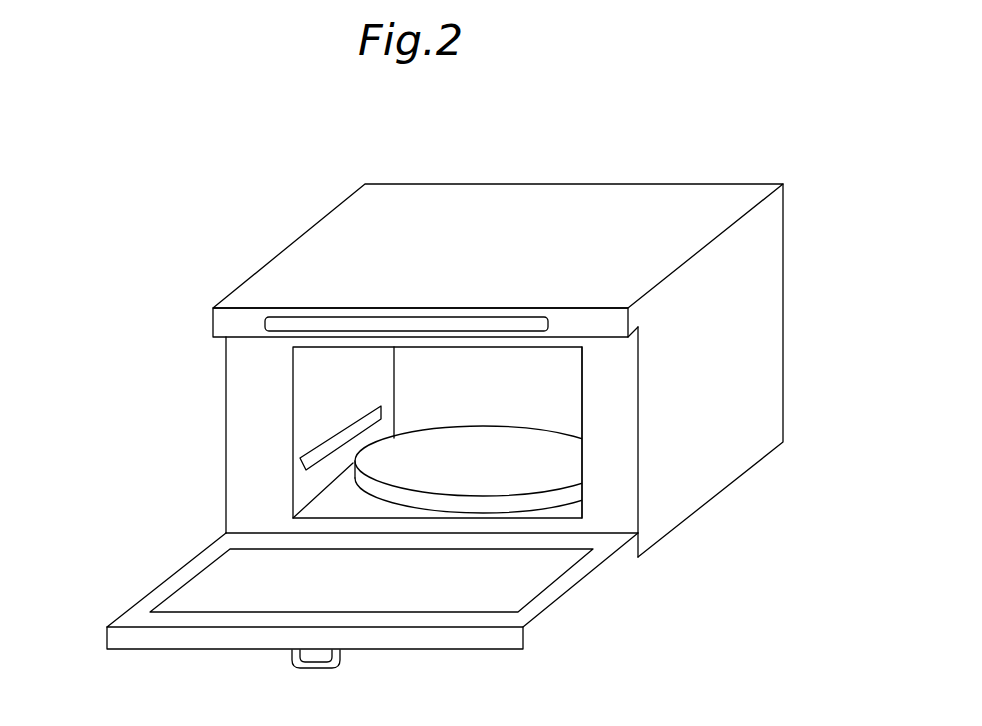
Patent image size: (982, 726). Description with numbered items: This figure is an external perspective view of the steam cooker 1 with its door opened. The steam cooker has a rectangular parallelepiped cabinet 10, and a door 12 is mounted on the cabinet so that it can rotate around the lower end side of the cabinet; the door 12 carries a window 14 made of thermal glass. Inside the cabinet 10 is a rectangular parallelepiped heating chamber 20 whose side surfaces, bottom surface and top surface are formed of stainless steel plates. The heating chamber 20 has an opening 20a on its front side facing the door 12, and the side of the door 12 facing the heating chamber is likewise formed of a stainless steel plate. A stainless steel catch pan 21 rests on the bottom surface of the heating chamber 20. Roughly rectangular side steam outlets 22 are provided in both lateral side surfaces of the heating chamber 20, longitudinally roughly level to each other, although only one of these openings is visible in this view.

The steam cooker 1 is at (748, 168).
The cabinet 10 is at (293, 282).
The door 12 is at (582, 588).
The window 14 is at (247, 583).
The heating chamber 20 is at (313, 368).
The opening 20a is at (563, 372).
The catch pan 21 is at (387, 470).
The side steam outlet 22 is at (318, 458).